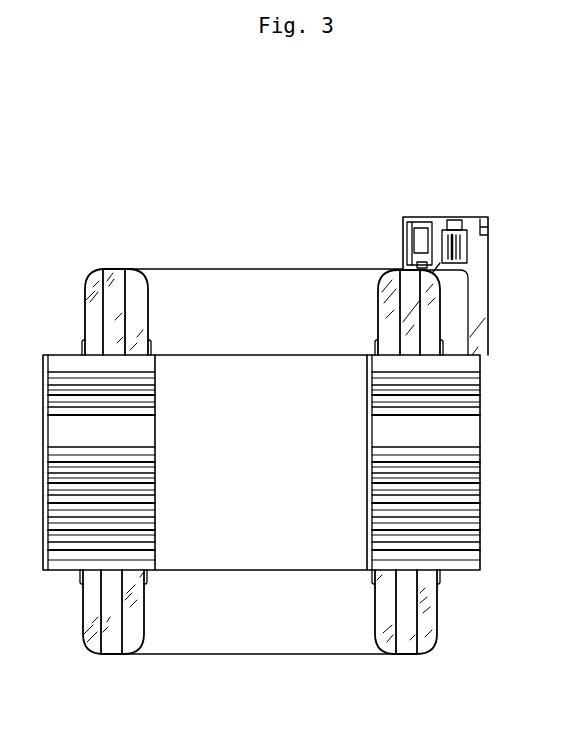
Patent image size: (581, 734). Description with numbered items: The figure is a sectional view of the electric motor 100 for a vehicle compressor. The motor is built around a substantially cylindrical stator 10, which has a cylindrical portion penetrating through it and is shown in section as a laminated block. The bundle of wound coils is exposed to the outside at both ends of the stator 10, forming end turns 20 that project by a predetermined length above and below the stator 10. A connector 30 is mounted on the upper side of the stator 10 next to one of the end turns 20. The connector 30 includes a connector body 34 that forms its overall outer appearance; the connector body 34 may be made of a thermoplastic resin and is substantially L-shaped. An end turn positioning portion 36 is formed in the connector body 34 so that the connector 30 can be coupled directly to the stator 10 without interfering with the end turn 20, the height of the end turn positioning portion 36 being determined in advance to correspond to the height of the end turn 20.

The electric motor 100 is at (308, 166).
The stator 10 is at (441, 461).
The end turns 20 is at (385, 283).
The connector 30 is at (497, 217).
The connector body 34 is at (476, 263).
The end turn positioning portion 36 is at (466, 294).